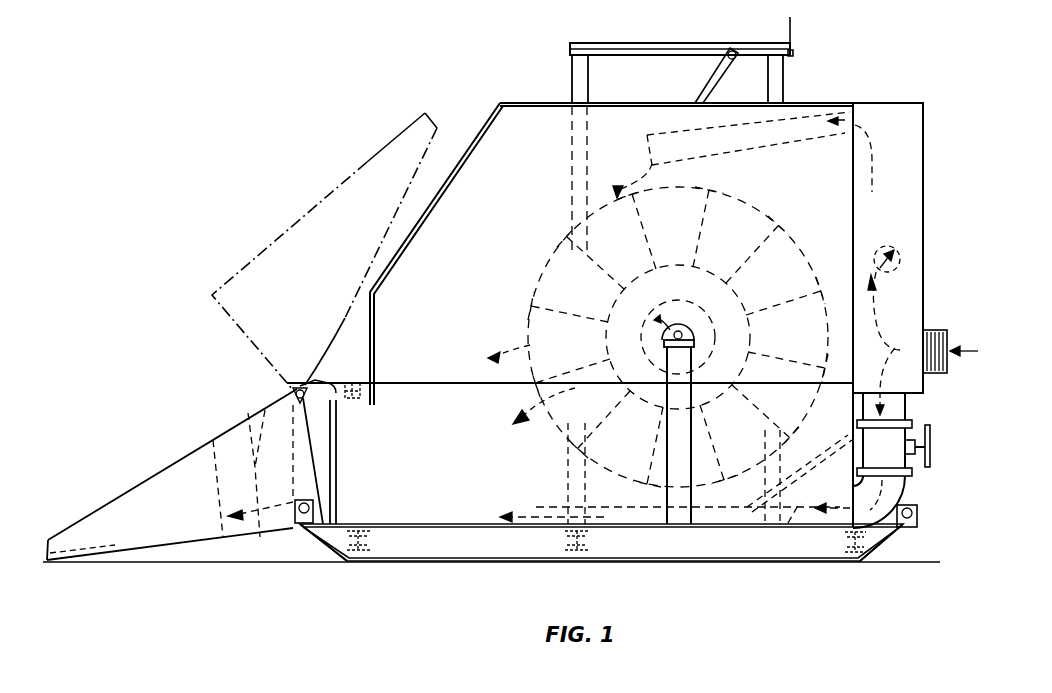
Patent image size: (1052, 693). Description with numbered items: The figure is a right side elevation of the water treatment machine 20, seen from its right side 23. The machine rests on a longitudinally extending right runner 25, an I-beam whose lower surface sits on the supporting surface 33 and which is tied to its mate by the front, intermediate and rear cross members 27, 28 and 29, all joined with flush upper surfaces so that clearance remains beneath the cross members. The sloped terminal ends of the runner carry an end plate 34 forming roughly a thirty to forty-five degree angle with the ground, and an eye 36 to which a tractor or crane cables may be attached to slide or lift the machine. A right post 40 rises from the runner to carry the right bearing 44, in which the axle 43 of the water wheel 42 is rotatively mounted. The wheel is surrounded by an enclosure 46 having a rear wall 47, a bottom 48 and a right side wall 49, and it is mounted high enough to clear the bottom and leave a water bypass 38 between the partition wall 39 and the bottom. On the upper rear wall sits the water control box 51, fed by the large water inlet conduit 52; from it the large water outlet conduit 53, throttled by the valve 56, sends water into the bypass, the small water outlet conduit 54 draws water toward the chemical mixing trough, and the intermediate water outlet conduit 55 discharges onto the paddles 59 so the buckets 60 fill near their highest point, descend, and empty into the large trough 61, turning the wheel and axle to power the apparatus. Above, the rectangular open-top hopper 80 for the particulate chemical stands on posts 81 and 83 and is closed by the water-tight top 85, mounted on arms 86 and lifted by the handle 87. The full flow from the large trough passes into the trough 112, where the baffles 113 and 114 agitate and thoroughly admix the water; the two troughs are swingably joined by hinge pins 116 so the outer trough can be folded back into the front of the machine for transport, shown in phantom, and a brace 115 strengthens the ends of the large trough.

The water treatment machine 20 is at (346, 170).
The right side 23 is at (428, 248).
The right runner 25 is at (490, 548).
The front cross member 27 is at (372, 542).
The intermediate cross member 28 is at (590, 544).
The rear cross member 29 is at (845, 545).
The supporting surface 33 is at (252, 560).
The end plate 34 is at (330, 550).
The eye 36 is at (300, 523).
The water bypass 38 is at (780, 532).
The partition wall 39 is at (799, 477).
The right post 40 is at (684, 450).
The water wheel 42 is at (812, 311).
The axle 43 is at (688, 339).
The right bearing 44 is at (664, 342).
The enclosure 46 is at (445, 336).
The rear wall 47 is at (857, 215).
The bottom 48 is at (430, 523).
The right side wall 49 is at (485, 198).
The water control box 51 is at (923, 268).
The water inlet conduit 52 is at (936, 330).
The large water outlet conduit 53 is at (906, 487).
The small water outlet conduit 54 is at (897, 249).
The intermediate water outlet conduit 55 is at (731, 155).
The valve 56 is at (898, 447).
The paddles 59 is at (546, 270).
The buckets 60 is at (618, 314).
The large trough 61 is at (466, 510).
The hopper 80 is at (627, 83).
The post 81 is at (578, 77).
The post 83 is at (782, 78).
The top 85 is at (596, 44).
The arms 86 is at (717, 80).
The handle 87 is at (795, 21).
The trough 112 is at (303, 216).
The baffle 113 is at (268, 412).
The baffle 114 is at (215, 471).
The brace 115 is at (355, 398).
The hinge pins 116 is at (312, 385).